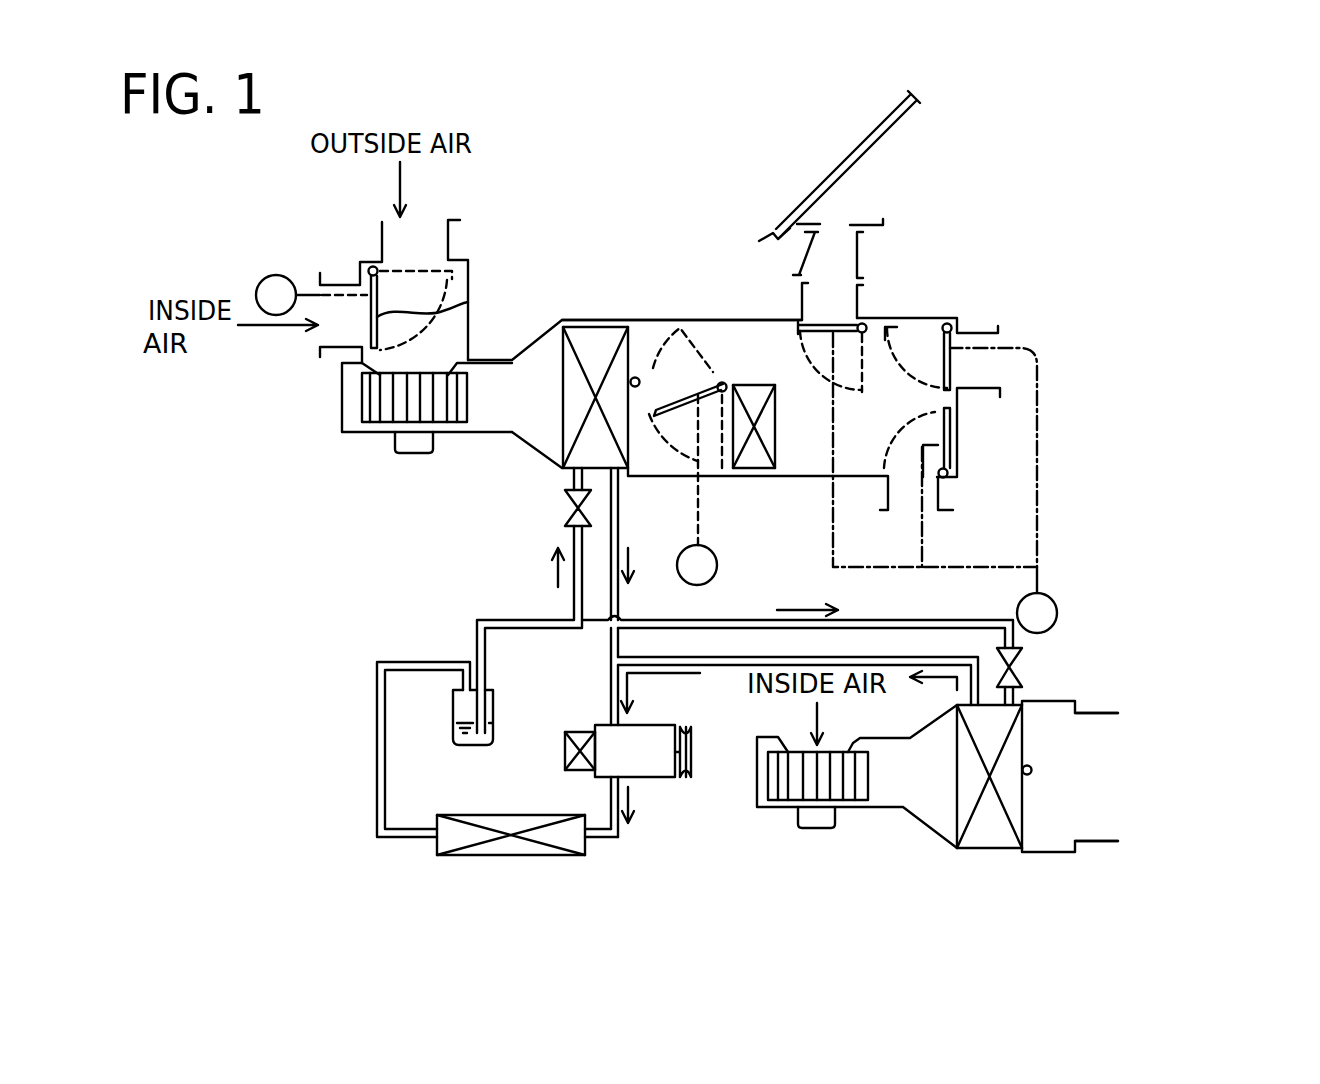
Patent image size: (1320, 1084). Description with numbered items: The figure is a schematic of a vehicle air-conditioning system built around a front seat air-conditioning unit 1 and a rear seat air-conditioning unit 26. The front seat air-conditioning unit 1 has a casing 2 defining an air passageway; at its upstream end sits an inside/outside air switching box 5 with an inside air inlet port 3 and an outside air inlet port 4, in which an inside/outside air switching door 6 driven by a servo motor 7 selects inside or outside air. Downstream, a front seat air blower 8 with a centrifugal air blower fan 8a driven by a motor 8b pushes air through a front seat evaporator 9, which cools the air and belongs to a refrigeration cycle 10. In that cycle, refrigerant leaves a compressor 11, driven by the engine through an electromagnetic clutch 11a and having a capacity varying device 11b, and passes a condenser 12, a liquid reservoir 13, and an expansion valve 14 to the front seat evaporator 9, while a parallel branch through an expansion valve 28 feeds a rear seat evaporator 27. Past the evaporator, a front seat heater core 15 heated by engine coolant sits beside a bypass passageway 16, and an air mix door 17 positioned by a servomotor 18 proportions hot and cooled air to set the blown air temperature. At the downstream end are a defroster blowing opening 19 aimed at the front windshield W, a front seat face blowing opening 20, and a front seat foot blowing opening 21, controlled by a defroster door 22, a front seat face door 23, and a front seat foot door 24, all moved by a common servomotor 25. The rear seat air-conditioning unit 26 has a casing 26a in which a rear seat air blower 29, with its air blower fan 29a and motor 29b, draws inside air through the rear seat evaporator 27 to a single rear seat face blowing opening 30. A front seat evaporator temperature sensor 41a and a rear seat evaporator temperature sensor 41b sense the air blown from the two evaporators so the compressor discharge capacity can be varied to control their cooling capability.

The front seat air-conditioning unit 1 is at (662, 294).
The casing 2 is at (720, 320).
The inside air inlet port 3 is at (322, 338).
The outside air inlet port 4 is at (414, 228).
The inside/outside air switching box 5 is at (468, 277).
The inside/outside air switching door 6 is at (468, 302).
The servo motor 7 is at (273, 273).
The front seat air blower 8 is at (447, 451).
The air blower fan 8a is at (450, 405).
The motor 8b is at (413, 450).
The front seat evaporator 9 is at (588, 325).
The refrigeration cycle 10 is at (359, 745).
The compressor 11 is at (655, 758).
The electromagnetic clutch 11a is at (693, 767).
The capacity varying device 11b is at (563, 735).
The condenser 12 is at (505, 822).
The liquid reservoir 13 is at (452, 733).
The expansion valve 14 is at (570, 511).
The front seat heater core 15 is at (764, 467).
The bypass passageway 16 is at (752, 342).
The air mix door 17 is at (672, 430).
The servomotor 18 is at (718, 565).
The defroster blowing opening 19 is at (837, 223).
The front seat face blowing opening 20 is at (980, 343).
The front seat foot blowing opening 21 is at (910, 507).
The defroster door 22 is at (817, 326).
The front seat face door 23 is at (948, 365).
The front seat foot door 24 is at (945, 435).
The servomotor 25 is at (1057, 612).
The rear seat air-conditioning unit 26 is at (1069, 879).
The casing 26a is at (1062, 697).
The rear seat evaporator 27 is at (990, 838).
The expansion valve 28 is at (1022, 667).
The rear seat air blower 29 is at (810, 847).
The air blower fan 29a is at (782, 788).
The motor 29b is at (835, 833).
The rear seat face blowing opening 30 is at (1097, 763).
The front seat evaporator temperature sensor 41a is at (635, 377).
The rear seat evaporator temperature sensor 41b is at (1028, 775).
The front windshield W is at (832, 167).